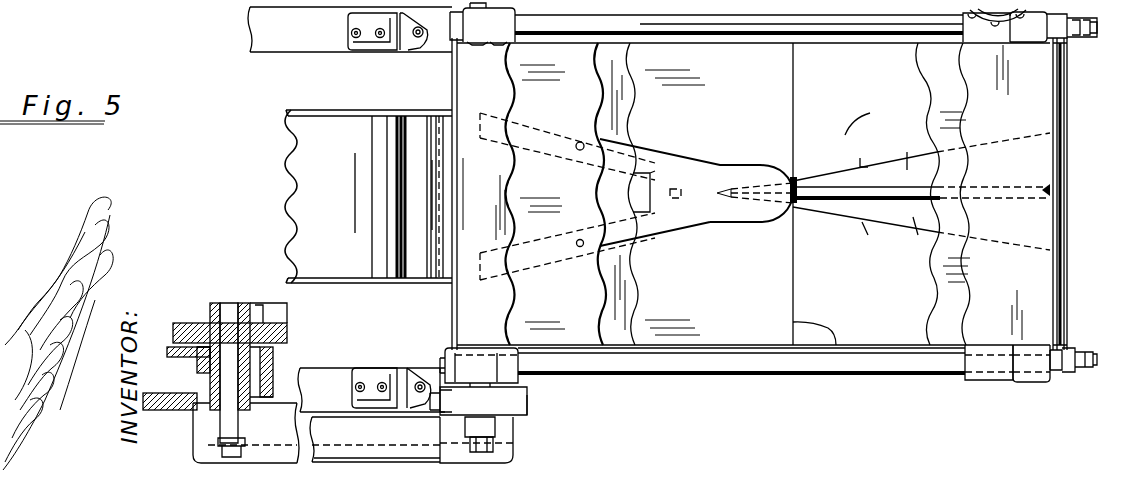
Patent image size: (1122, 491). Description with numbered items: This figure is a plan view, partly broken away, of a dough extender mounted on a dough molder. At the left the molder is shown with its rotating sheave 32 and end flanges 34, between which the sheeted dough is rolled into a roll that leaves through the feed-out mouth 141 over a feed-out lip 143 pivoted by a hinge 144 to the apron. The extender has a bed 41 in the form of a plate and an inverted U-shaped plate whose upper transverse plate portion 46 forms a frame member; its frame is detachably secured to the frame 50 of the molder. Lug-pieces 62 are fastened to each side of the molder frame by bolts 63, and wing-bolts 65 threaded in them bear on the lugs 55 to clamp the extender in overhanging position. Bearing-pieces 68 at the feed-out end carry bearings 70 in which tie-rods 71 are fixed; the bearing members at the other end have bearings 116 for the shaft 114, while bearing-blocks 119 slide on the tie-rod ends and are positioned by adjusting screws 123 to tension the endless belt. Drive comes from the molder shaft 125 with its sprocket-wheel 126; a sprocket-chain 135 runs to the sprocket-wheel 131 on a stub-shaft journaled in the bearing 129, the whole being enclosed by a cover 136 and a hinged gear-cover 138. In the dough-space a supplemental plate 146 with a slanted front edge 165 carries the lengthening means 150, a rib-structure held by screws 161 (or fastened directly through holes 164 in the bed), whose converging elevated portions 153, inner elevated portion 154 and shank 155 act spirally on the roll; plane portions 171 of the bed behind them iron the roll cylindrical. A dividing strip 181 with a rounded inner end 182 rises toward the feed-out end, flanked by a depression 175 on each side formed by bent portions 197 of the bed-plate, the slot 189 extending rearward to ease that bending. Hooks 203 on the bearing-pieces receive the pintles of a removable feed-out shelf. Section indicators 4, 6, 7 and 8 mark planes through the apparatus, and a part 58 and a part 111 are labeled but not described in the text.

The rotating sheave 32 is at (362, 283).
The end flanges 34 is at (332, 283).
The bed 41 is at (885, 333).
The upper transverse plate portion 46 is at (937, 289).
The frame 50 is at (289, 52).
The lugs 55 is at (441, 370).
The bracket member 58 is at (242, 5).
The lug-pieces 62 is at (366, 50).
The bolts 63 is at (350, 35).
The wing-bolts 65 is at (416, 50).
The bearing-pieces 68 is at (1055, 372).
The bearings 70 is at (979, 33).
The tie-rods 71 is at (816, 6).
The cutting blade 111 is at (973, 320).
The shaft 114 is at (489, 387).
The bearings 116 is at (498, 13).
The bearing-blocks 119 is at (1030, 36).
The adjusting screws 123 is at (1098, 8).
The shaft 125 is at (222, 428).
The sprocket-wheel 126 is at (245, 442).
The bearing 129 is at (495, 427).
The sprocket-wheel 131 is at (510, 443).
The sprocket-chain 135 is at (383, 432).
The cover 136 is at (513, 457).
The gear-cover 138 is at (522, 405).
The feed-out mouth 141 is at (415, 283).
The feed-out lip 143 is at (444, 283).
The hinge 144 is at (437, 227).
The supplemental plate 146 is at (836, 345).
The lengthening means 150 is at (655, 157).
The elevated portions 153 is at (550, 242).
The elevated portion 154 is at (662, 208).
The shank 155 is at (768, 172).
The screws 161 is at (575, 146).
The holes 164 is at (960, 6).
The front edge 165 is at (795, 262).
The plane portions 171 is at (874, 121).
The depression 175 is at (914, 196).
The strip 181 is at (863, 196).
The rounded inner end 182 is at (803, 173).
The slot 189 is at (769, 199).
The bent portions 197 is at (879, 199).
The hooks 203 is at (1083, 36).
The section line 4- 4 is at (428, 195).
The section line 6- 6 is at (582, 126).
The section line 7- 7 is at (727, 146).
The section line 8- 8 is at (982, 130).